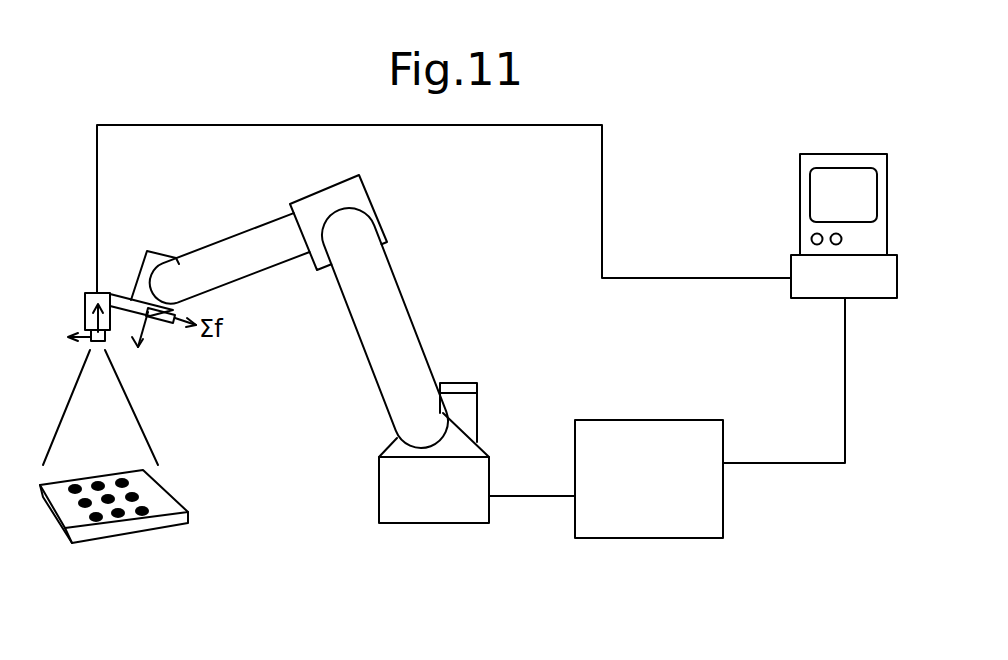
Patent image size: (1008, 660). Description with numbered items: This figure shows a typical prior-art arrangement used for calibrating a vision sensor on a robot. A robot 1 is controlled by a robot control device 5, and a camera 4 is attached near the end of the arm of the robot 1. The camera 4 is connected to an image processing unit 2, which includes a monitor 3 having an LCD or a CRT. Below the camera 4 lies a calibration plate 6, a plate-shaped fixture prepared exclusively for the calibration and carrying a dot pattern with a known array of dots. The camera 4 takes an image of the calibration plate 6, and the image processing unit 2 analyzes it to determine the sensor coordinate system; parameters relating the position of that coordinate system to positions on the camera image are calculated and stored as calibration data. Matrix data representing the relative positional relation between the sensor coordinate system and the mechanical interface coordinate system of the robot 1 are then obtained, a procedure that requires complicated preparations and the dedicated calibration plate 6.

The robot 1 is at (414, 328).
The image processing unit 2 is at (790, 260).
The monitor 3 is at (798, 170).
The camera 4 is at (86, 300).
The robot control device 5 is at (657, 540).
The calibration plate 6 is at (183, 492).